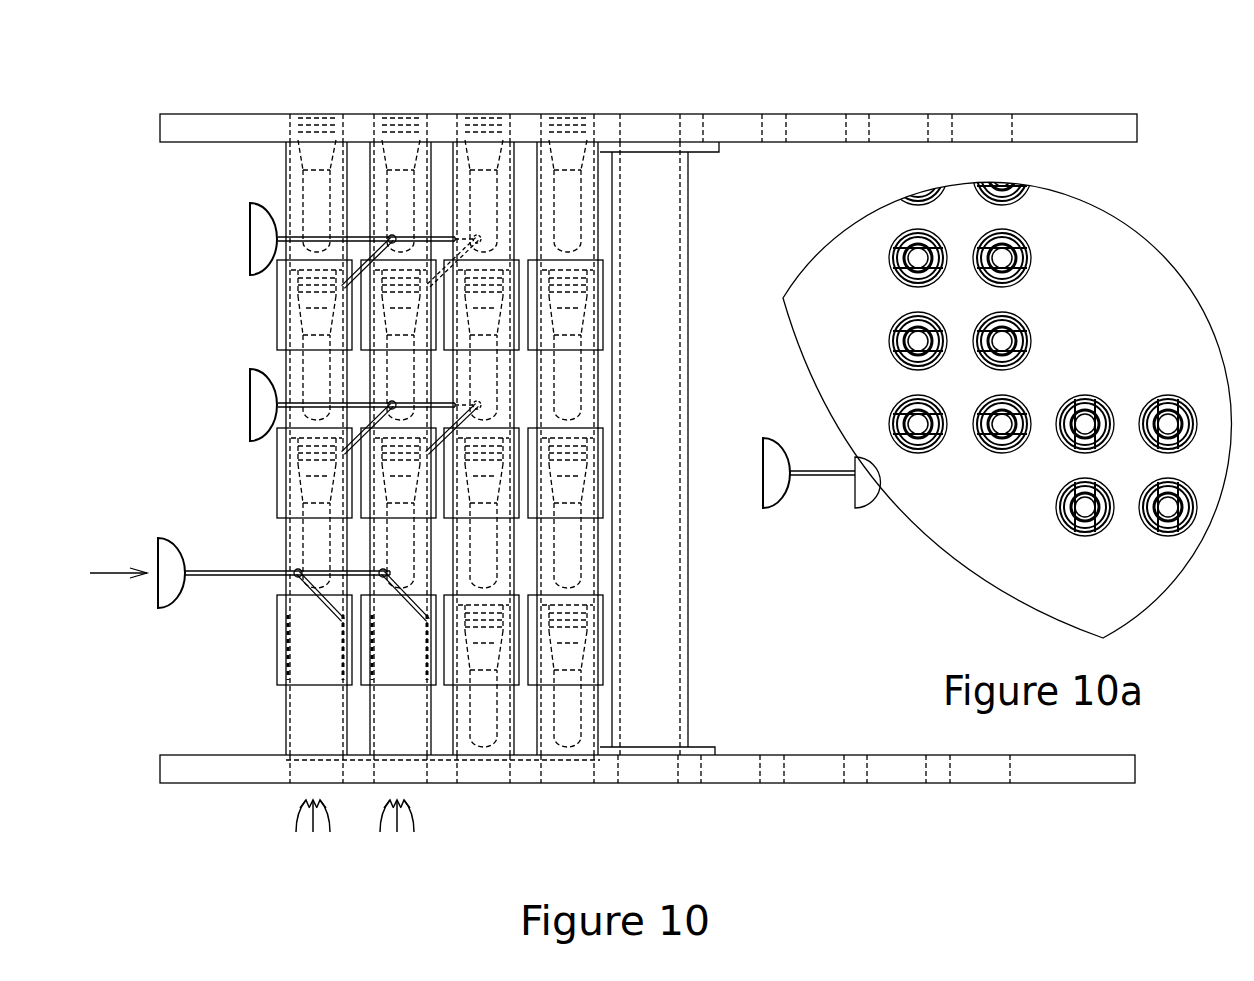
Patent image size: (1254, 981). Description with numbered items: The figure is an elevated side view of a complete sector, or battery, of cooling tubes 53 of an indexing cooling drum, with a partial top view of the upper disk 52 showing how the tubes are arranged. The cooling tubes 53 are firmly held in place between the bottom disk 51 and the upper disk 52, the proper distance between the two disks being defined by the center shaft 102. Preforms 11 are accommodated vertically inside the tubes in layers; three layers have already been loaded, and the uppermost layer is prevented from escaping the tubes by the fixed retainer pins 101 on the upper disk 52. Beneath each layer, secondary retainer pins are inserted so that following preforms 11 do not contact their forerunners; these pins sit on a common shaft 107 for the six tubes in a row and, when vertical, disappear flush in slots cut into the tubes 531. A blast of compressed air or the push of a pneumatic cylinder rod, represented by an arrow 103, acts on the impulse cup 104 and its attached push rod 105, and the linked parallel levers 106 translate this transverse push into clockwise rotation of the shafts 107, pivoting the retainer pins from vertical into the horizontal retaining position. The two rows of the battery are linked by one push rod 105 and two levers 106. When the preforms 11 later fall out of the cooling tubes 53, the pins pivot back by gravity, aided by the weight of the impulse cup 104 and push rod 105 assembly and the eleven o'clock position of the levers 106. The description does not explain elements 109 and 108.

In FIG. 10, the fixed retainer pin 101 is at (318, 113).
In FIG. 10A, the fixed retainer pin 101 is at (893, 337).
In FIG. 10, the upper disk 52 is at (440, 128).
In FIG. 10A, the upper disk 52 is at (840, 305).
In FIG. 10, the preform 11 is at (420, 195).
In FIG. 10, the cooling tube 53 is at (395, 364).
In FIG. 10, the tube 531 is at (430, 387).
In FIG. 10, the lever 106 is at (450, 432).
In FIG. 10, the shaft 107 is at (430, 617).
In FIG. 10, the center shaft 102 is at (648, 662).
In FIG. 10, the bottom disk 51 is at (827, 768).
In FIG. 10, the arrow 103 is at (113, 568).
In FIG. 10, the impulse cup 104 is at (167, 558).
In FIG. 10, the push rod 105 is at (280, 575).
In FIG. 10, the lower plate passage 109 is at (397, 770).
In FIG. 10, the gas flow 108 is at (313, 842).